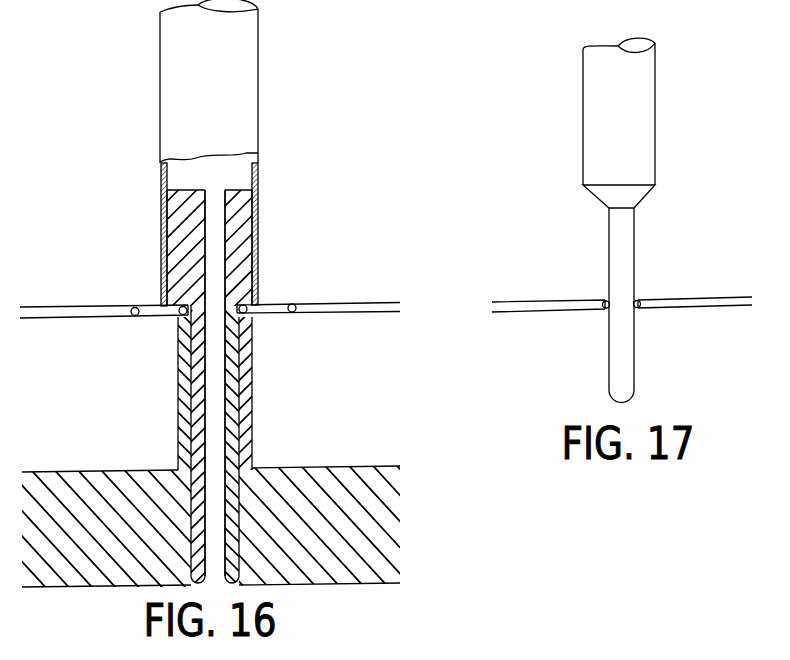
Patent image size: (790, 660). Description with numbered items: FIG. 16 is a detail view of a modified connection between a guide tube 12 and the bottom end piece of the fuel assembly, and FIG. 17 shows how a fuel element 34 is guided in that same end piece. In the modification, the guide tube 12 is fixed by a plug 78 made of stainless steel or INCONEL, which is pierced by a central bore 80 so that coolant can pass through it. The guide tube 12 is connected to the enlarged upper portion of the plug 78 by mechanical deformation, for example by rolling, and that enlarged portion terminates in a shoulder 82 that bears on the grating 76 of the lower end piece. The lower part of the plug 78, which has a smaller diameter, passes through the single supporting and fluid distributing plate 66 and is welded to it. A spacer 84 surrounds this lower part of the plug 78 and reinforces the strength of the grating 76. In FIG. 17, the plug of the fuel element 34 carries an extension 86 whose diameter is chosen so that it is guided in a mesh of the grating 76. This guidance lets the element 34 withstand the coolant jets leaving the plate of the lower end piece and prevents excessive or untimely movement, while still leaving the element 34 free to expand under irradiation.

In FIG. 16, the guide tube 12 is at (242, 82).
In FIG. 16, the plug 78 is at (237, 212).
In FIG. 16, the central bore 80 is at (211, 258).
In FIG. 16, the shoulder 82 is at (246, 297).
In FIG. 16, the grating 76 is at (296, 303).
In FIG. 17, the grating 76 is at (553, 302).
In FIG. 16, the spacer 84 is at (246, 391).
In FIG. 16, the supporting and fluid distributing plate 66 is at (310, 470).
In FIG. 17, the fuel element 34 is at (598, 126).
In FIG. 17, the extension 86 is at (628, 263).